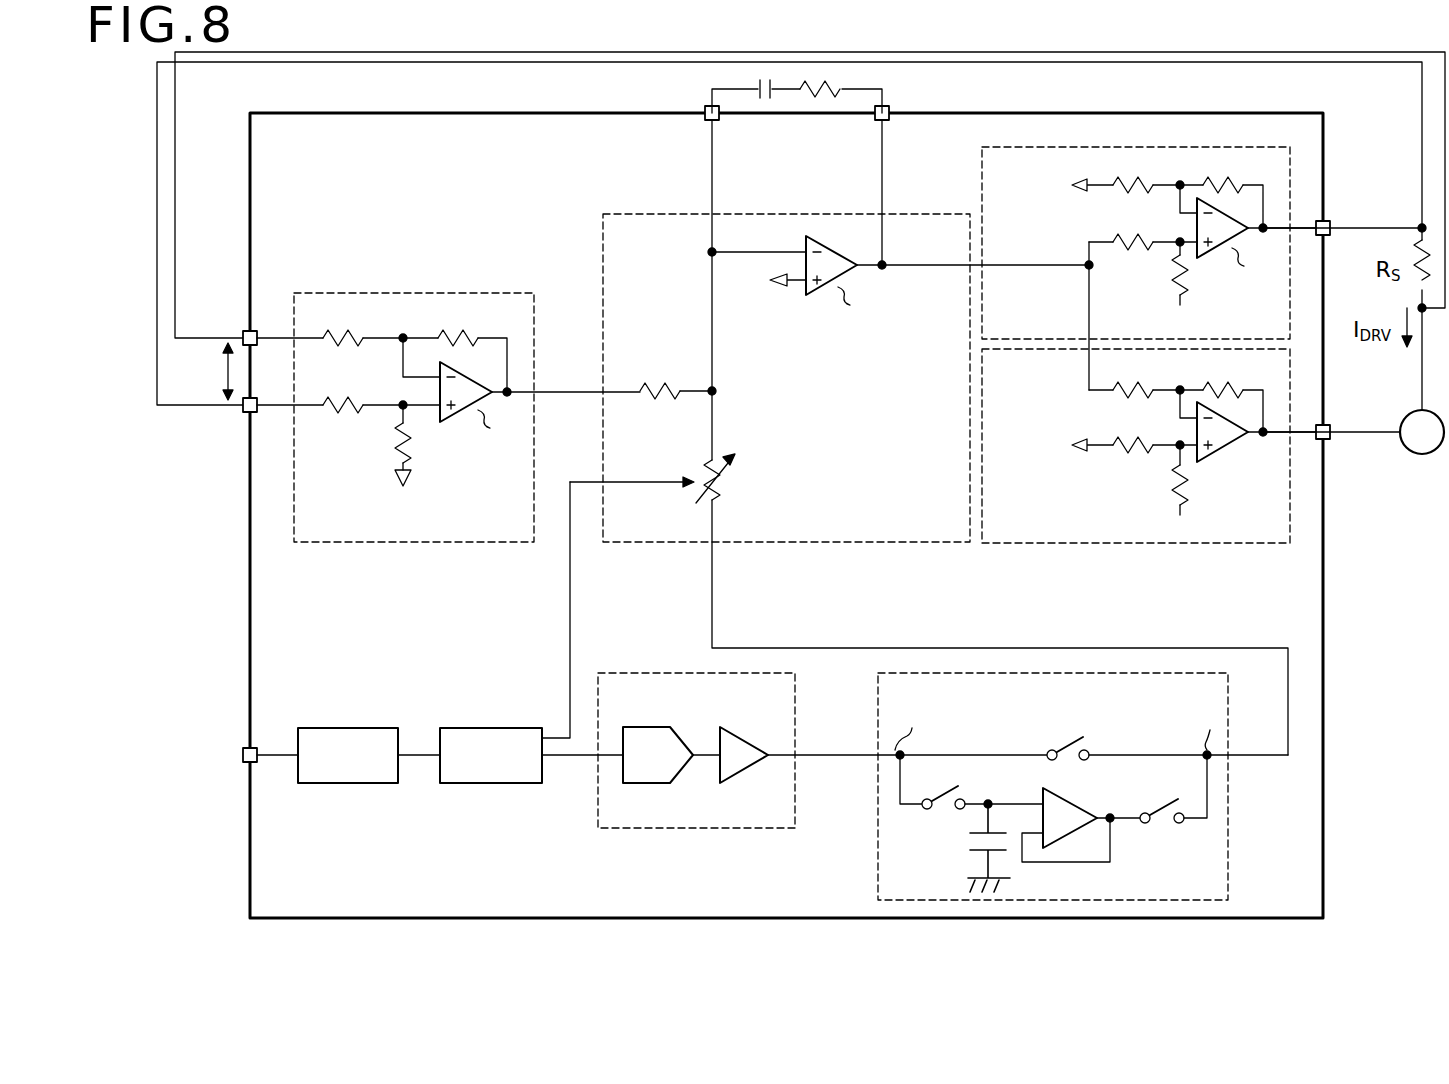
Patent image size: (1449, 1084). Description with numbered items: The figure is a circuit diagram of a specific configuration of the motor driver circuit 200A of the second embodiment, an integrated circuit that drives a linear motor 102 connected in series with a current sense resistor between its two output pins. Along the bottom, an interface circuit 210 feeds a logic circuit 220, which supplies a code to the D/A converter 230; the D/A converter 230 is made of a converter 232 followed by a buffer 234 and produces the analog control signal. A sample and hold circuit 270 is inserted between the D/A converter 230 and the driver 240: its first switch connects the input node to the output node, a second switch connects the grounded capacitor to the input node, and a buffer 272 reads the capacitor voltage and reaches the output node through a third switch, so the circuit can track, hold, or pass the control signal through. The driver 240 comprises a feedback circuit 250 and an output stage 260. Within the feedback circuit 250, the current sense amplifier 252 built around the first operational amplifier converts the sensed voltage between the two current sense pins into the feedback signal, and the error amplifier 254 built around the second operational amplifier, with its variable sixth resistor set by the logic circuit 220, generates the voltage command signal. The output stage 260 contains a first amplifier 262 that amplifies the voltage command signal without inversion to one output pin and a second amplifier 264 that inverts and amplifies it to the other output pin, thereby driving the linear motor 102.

The linear motor 102 is at (1422, 455).
The motor driver circuit 200A is at (1323, 632).
The interface circuit 210 is at (348, 728).
The logic circuit 220 is at (491, 728).
The D/A converter 230 is at (695, 828).
The converter 232 is at (648, 727).
The buffer 234 is at (745, 727).
The driver 240 is at (1300, 612).
The feedback circuit 250 is at (970, 566).
The current sense amplifier 252 is at (360, 542).
The error amplifier 254 is at (805, 542).
The output stage 260 is at (984, 566).
The first amplifier 262 is at (1198, 147).
The second amplifier 264 is at (1198, 543).
The sample and hold circuit 270 is at (1228, 858).
The buffer 272 is at (1063, 790).